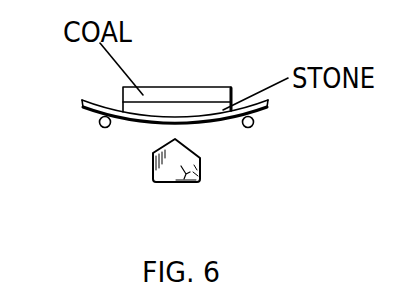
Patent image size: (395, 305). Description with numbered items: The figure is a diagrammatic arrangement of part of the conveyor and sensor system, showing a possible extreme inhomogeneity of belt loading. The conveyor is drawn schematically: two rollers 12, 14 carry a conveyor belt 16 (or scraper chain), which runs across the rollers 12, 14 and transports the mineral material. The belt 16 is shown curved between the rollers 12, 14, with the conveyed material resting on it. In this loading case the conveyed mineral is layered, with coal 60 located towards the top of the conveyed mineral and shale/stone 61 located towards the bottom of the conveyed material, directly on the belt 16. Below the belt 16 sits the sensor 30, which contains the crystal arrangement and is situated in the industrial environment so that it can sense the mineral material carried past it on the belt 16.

The roller 12 is at (98, 130).
The roller 14 is at (252, 128).
The conveyor belt 16 is at (92, 112).
The sensor 30 is at (187, 183).
The coal 60 is at (180, 97).
The shale/stone 61 is at (120, 107).